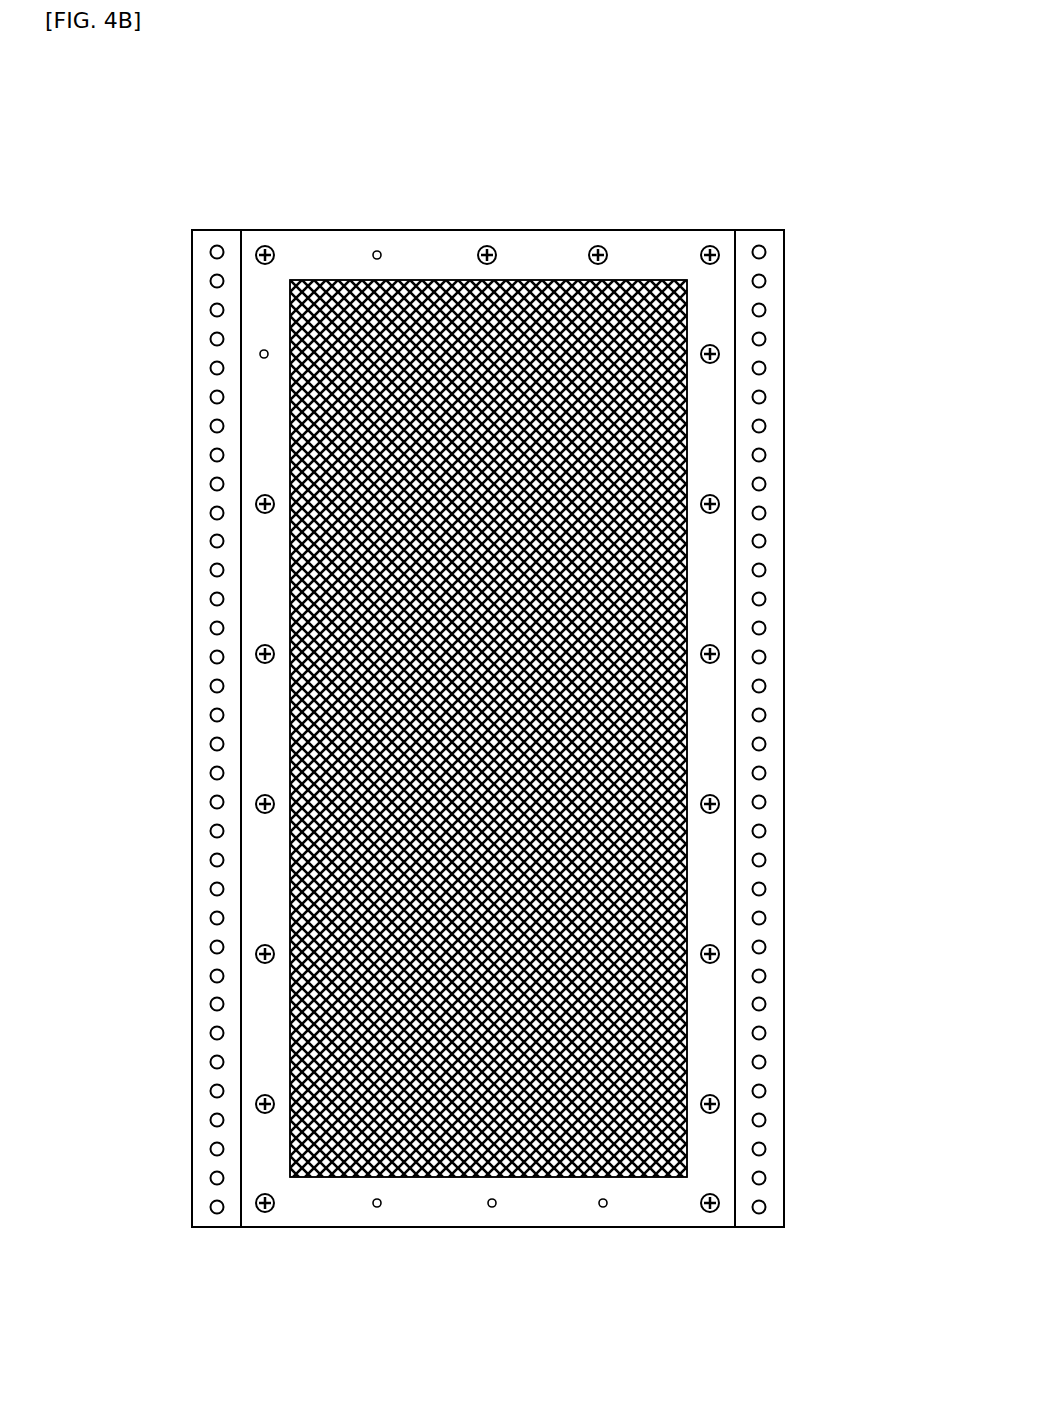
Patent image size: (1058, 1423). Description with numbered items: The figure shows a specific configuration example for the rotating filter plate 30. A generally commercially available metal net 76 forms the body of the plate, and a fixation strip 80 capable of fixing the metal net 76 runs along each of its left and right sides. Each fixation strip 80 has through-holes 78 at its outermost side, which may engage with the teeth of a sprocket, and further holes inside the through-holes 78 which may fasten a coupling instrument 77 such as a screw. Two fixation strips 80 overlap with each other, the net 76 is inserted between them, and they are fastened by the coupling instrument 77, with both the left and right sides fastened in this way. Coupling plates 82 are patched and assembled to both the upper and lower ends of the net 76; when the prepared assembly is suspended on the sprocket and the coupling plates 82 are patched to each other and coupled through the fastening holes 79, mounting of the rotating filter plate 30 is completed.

The rotating filter plate 30 is at (768, 188).
The metal net 76 is at (528, 300).
The coupling instrument 77 is at (719, 504).
The through-holes 78 is at (214, 281).
The fastening holes 79 is at (379, 251).
The fixation strip 80 is at (190, 953).
The coupling plates 82 is at (645, 255).